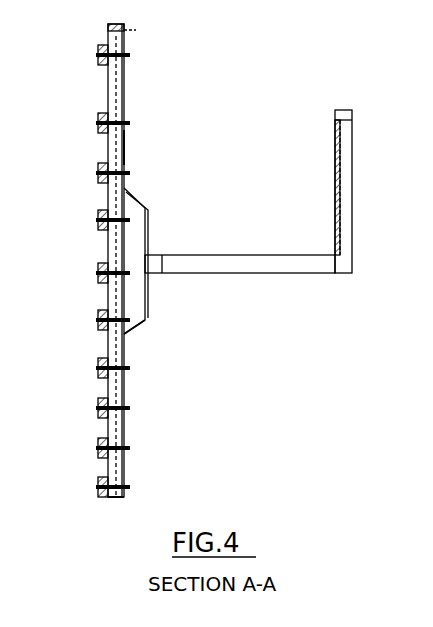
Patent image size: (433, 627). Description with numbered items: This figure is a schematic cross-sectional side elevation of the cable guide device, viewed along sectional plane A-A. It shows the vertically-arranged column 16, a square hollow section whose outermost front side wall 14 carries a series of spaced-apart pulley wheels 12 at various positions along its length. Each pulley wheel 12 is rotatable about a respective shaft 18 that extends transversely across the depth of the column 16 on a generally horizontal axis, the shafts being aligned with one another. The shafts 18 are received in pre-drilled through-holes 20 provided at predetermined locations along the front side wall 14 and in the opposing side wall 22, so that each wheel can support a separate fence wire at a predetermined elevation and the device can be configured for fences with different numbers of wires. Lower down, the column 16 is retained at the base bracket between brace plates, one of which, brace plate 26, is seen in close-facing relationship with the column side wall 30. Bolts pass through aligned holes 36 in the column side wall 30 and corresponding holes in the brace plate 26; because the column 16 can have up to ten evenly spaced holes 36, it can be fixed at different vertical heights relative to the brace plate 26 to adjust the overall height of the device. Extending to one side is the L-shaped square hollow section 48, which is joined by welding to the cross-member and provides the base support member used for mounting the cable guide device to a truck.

The pulley wheel 12 is at (105, 497).
The outermost front side wall 14 is at (108, 153).
The column 16 is at (122, 92).
The shaft 18 is at (132, 485).
The pre-drilled through-holes 20 is at (108, 360).
The opposing side wall 22 is at (128, 153).
The brace plate 26 is at (135, 237).
The column side wall 30 is at (117, 110).
The aligned hole 36 is at (126, 333).
The L-shaped square hollow section 48 is at (292, 268).